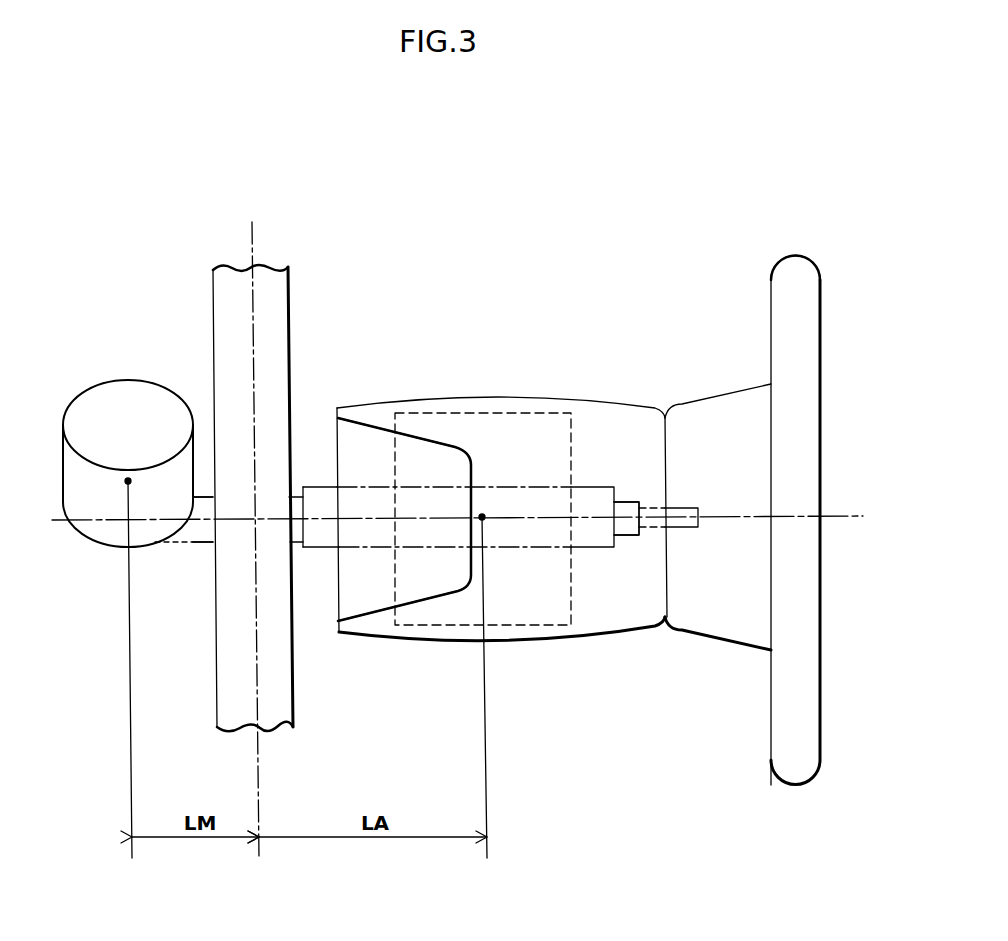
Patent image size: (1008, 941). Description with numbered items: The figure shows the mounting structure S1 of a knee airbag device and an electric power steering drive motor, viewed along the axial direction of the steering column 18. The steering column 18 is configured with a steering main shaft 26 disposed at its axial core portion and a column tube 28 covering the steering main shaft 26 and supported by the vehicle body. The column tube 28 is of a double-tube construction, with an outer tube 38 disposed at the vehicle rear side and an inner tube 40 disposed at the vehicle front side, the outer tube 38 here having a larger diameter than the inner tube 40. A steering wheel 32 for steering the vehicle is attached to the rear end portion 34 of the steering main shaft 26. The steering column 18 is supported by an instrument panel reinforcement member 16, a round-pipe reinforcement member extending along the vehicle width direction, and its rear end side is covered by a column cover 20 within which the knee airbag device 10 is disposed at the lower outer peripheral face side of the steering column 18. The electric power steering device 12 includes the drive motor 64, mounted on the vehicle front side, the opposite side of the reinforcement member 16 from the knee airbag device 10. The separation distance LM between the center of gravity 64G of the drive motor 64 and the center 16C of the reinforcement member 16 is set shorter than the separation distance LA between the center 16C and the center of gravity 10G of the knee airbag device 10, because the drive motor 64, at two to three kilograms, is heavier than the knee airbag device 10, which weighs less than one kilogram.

The knee airbag device 10 is at (507, 511).
The center of gravity of the knee airbag device 10G is at (482, 513).
The electric power steering device 12 is at (128, 297).
The instrument panel reinforcement member 16 is at (295, 290).
The center of the instrument panel reinforcement member 16C is at (253, 248).
The steering column 18 is at (595, 465).
The column cover 20 is at (420, 400).
The steering main shaft 26 is at (626, 518).
The column tube 28 is at (203, 519).
The steering wheel 32 is at (820, 385).
The bearing portion 34 is at (682, 507).
The outer tube 38 is at (537, 550).
The inner tube 40 is at (197, 544).
The drive motor 64 is at (100, 378).
The center of gravity of the drive motor 64G is at (128, 481).
The mounting structure S1 is at (533, 232).